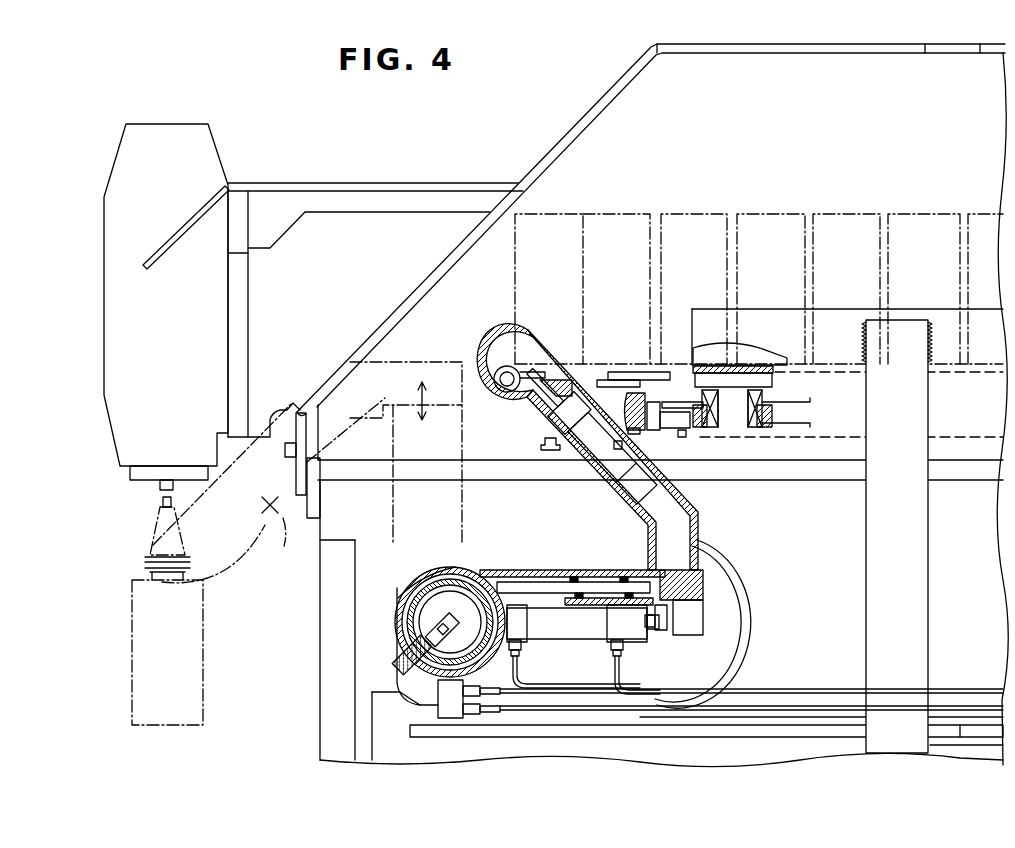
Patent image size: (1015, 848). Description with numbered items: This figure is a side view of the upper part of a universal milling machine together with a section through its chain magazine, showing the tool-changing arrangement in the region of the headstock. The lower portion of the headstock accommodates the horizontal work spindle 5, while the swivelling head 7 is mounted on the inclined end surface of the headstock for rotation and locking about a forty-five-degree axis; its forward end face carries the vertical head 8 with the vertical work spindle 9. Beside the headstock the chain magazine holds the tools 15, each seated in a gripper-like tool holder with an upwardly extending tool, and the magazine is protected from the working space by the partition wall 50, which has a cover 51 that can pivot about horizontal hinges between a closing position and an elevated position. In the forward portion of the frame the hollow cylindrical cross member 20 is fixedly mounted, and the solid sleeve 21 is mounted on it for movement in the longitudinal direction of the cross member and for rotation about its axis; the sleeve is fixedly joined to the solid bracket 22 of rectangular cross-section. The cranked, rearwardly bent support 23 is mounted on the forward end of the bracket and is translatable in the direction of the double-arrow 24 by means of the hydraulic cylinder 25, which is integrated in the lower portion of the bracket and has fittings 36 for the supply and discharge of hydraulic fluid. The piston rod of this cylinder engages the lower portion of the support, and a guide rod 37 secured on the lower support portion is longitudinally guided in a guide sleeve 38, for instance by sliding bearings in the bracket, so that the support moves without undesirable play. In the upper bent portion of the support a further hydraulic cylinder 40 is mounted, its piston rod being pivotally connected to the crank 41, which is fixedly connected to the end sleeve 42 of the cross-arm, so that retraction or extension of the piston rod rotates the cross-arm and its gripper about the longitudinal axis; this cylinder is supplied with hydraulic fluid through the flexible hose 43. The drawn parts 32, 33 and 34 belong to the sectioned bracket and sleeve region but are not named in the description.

The horizontal work spindle 5 is at (290, 412).
The swivelling head 7 is at (324, 287).
The vertical head 8 is at (170, 331).
The vertical work spindle 9 is at (148, 476).
The tool 15 is at (738, 225).
The hollow cylindrical cross member 20 is at (482, 552).
The sleeve 21 is at (433, 560).
The bracket 22 is at (517, 563).
The support 23 is at (725, 512).
The arrows 24 is at (418, 422).
The hydraulic cylinder 25 is at (627, 628).
The housing cover 32 is at (405, 575).
The drive shaft 33 is at (433, 628).
The locking wedge 34 is at (398, 655).
The fittings 36 is at (513, 676).
The guide rod 37 is at (545, 570).
The guide sleeve 38 is at (616, 560).
The hydraulic cylinder 40 is at (600, 473).
The crank 41 is at (533, 357).
The end sleeve 42 is at (492, 372).
The flexible hose 43 is at (732, 595).
The partition wall 50 is at (575, 130).
The cover 51 is at (340, 183).